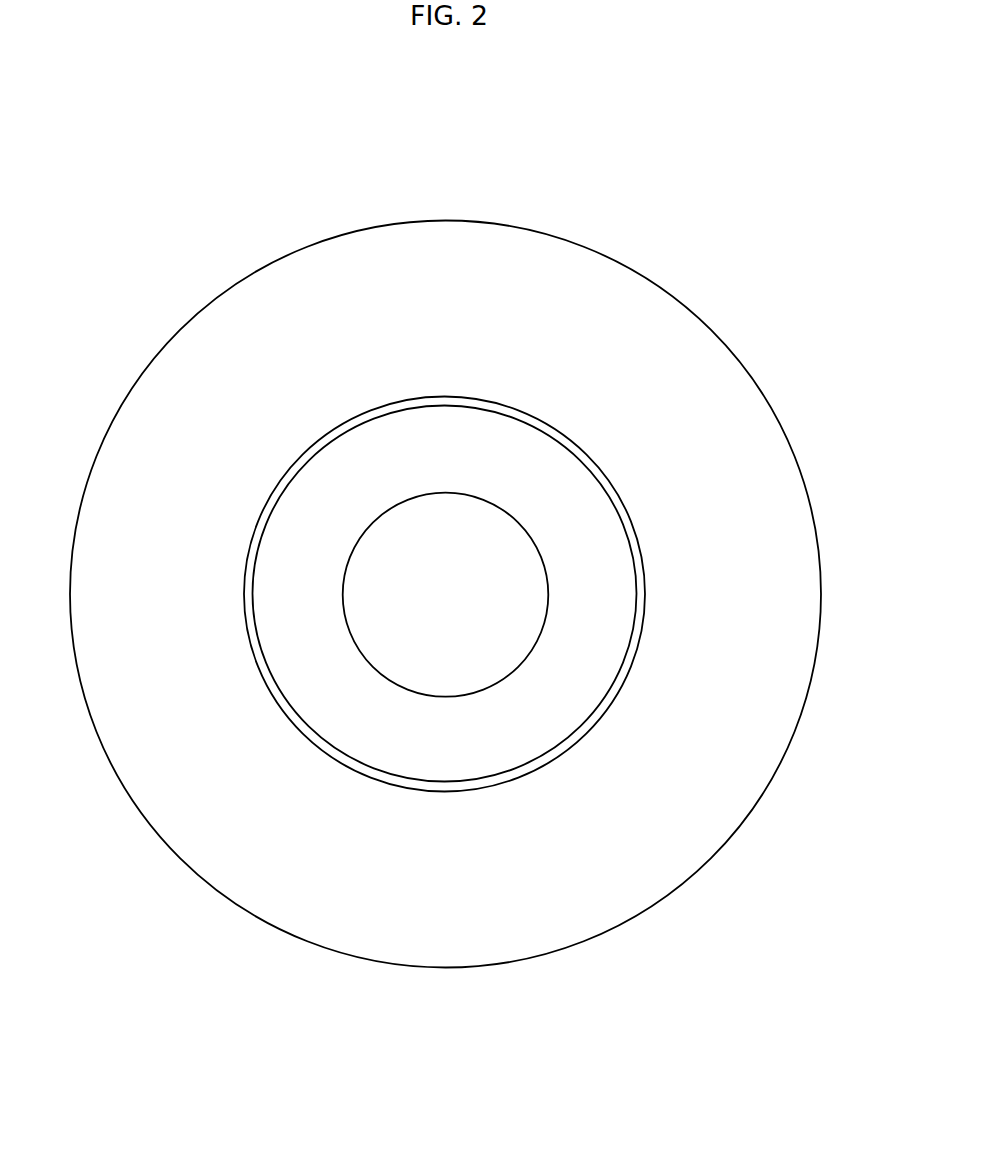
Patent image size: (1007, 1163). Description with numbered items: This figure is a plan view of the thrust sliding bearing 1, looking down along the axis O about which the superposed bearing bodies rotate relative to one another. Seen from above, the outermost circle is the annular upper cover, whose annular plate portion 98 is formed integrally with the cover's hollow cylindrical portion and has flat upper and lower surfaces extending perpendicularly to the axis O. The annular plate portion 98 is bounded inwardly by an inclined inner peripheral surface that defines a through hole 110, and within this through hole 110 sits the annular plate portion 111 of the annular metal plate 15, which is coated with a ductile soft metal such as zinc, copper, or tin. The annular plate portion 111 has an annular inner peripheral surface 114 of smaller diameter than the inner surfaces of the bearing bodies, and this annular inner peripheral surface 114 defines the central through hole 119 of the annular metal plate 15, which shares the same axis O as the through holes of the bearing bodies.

The thrust sliding bearing 1 is at (774, 388).
The annular metal plate 15 is at (193, 317).
The annular plate portion 98 is at (215, 863).
The through hole 110 is at (250, 562).
The annular plate portion 111 is at (593, 580).
The annular inner peripheral surface 114 is at (395, 507).
The central through hole 119 is at (470, 673).
The axis O is at (445, 595).